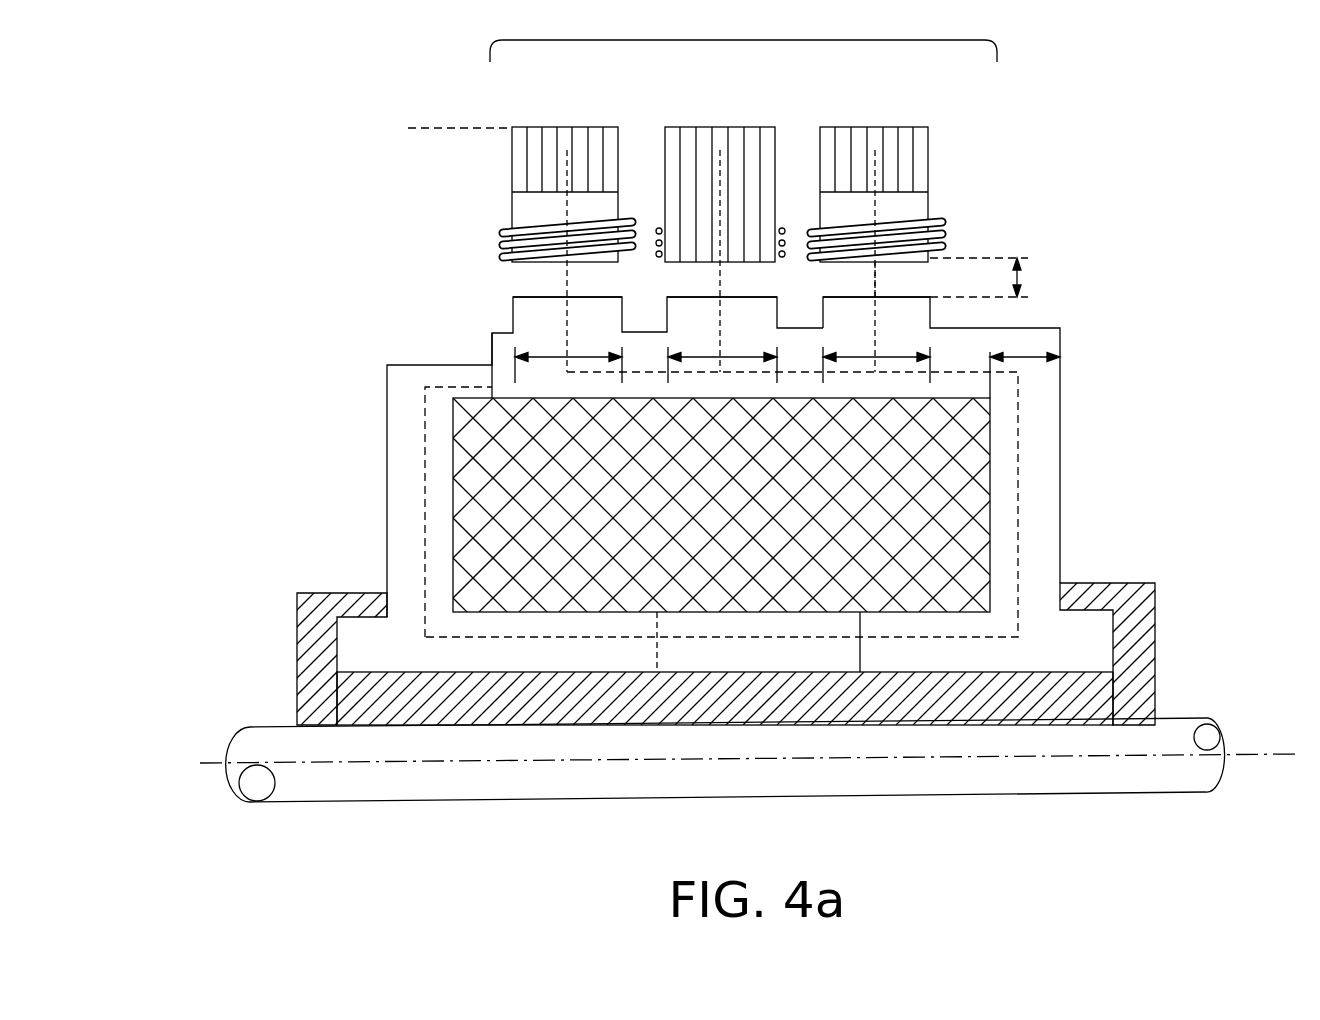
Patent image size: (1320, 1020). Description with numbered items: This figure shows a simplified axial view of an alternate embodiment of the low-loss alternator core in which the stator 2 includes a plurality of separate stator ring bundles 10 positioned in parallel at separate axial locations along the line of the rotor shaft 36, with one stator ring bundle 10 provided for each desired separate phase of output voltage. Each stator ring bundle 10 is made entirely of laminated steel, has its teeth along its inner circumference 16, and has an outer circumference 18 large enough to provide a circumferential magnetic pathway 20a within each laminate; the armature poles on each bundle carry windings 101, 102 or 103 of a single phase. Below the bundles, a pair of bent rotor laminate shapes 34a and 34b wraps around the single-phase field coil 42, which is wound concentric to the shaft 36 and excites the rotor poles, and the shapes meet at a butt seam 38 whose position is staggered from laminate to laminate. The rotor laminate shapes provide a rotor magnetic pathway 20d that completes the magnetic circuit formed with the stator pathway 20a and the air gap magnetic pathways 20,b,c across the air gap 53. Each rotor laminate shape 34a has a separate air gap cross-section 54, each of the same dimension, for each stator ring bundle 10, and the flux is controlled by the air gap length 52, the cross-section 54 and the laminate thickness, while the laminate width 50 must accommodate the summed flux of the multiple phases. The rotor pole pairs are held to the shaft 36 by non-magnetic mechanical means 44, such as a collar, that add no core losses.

The stator 2 is at (760, 24).
The stator ring bundle 10 is at (531, 108).
The outer circumference 18 is at (455, 132).
The circumferential magnetic pathway 20a is at (567, 218).
The air gap magnetic pathways 20,b,c is at (877, 297).
The winding 101 is at (507, 253).
The winding 103 is at (932, 216).
The winding 102 is at (784, 258).
The inner circumference 16 is at (995, 258).
The air gap length 52 is at (1021, 278).
The width 50 is at (1020, 358).
The air gap 53 is at (552, 276).
The air gap cross-section 54 is at (552, 360).
The rotor laminate shape 34a is at (1050, 492).
The rotor laminate shape 34b is at (405, 400).
The field coil 42 is at (472, 530).
The rotor magnetic pathway 20d is at (505, 640).
The butt seam 38 is at (860, 625).
The mechanical means 44 is at (300, 597).
The rotor shaft 36 is at (1177, 727).